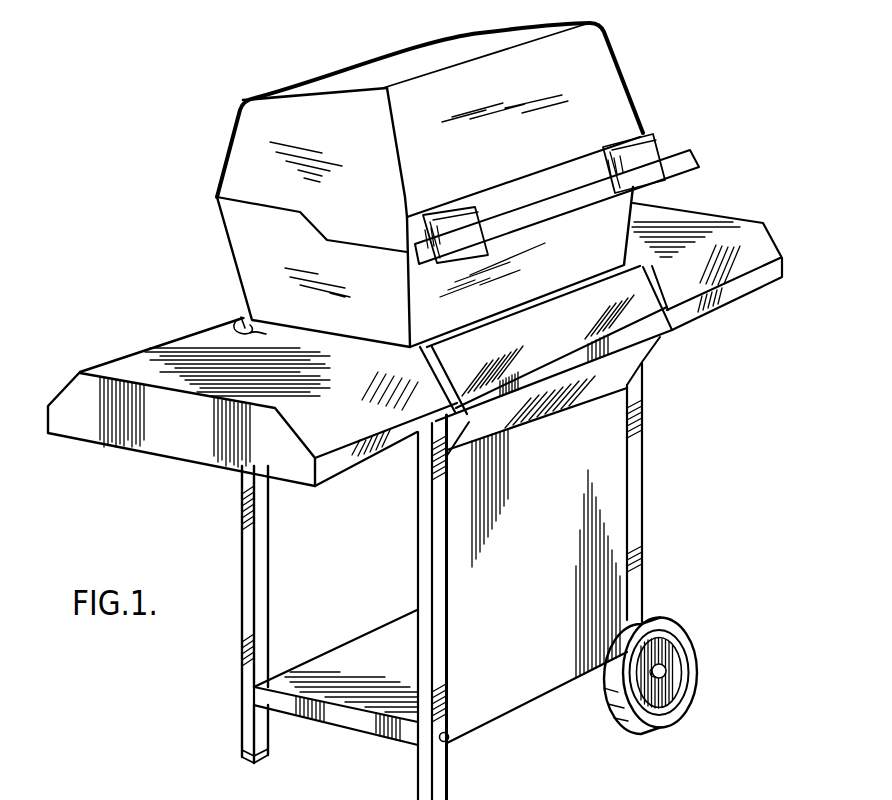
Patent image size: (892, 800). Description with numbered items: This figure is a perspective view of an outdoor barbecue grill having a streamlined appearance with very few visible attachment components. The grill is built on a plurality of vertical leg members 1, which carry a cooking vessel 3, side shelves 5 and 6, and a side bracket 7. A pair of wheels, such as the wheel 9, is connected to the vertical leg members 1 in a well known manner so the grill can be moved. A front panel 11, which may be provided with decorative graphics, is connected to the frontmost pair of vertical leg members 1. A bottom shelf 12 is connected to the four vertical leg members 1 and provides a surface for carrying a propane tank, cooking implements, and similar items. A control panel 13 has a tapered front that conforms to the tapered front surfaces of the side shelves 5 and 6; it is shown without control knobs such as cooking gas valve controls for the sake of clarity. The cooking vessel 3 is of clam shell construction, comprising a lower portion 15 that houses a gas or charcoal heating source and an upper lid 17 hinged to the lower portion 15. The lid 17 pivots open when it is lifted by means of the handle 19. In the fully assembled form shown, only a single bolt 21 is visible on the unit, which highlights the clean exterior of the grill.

The vertical leg members 1 is at (422, 528).
The cooking vessel 3 is at (650, 82).
The side shelf 5 is at (140, 363).
The side shelf 6 is at (727, 215).
The side bracket 7 is at (233, 316).
The wheel 9 is at (650, 618).
The front panel 11 is at (603, 475).
The bottom shelf 12 is at (348, 667).
The control panel 13 is at (642, 312).
The lower portion 15 is at (250, 240).
The upper lid 17 is at (240, 142).
The handle 19 is at (697, 135).
The bolt 21 is at (447, 742).